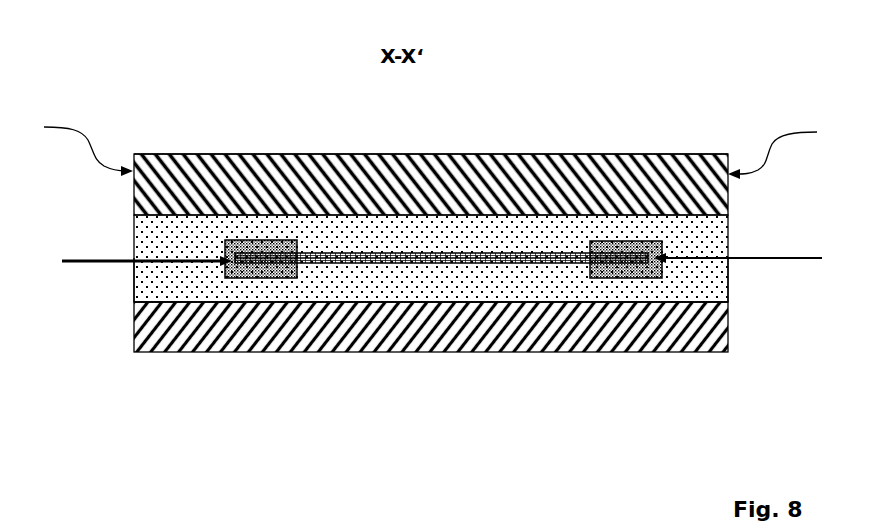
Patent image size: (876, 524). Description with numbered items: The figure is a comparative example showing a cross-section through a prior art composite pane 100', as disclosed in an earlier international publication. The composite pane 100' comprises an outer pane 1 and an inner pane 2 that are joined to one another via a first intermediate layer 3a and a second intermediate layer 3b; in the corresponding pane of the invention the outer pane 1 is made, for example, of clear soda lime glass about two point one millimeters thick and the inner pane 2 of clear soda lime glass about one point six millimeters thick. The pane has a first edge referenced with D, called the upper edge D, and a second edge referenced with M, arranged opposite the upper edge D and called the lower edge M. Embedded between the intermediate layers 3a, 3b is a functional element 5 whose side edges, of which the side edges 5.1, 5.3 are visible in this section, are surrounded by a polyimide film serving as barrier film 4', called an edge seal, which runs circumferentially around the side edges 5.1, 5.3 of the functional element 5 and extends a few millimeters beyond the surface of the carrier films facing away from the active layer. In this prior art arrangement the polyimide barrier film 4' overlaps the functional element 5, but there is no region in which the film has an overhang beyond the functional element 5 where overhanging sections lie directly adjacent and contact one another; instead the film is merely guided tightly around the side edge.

The prior art composite pane 100' is at (416, 184).
The outer pane 1 is at (146, 154).
The inner pane 2 is at (212, 338).
The first intermediate layer 3a is at (704, 232).
The second intermediate layer 3b is at (710, 288).
The barrier film 4' is at (434, 296).
The functional element 5 is at (500, 263).
The side edge 5.1 is at (127, 265).
The side edge 5.3 is at (756, 259).
The lower edge M is at (76, 145).
The upper edge D is at (785, 150).